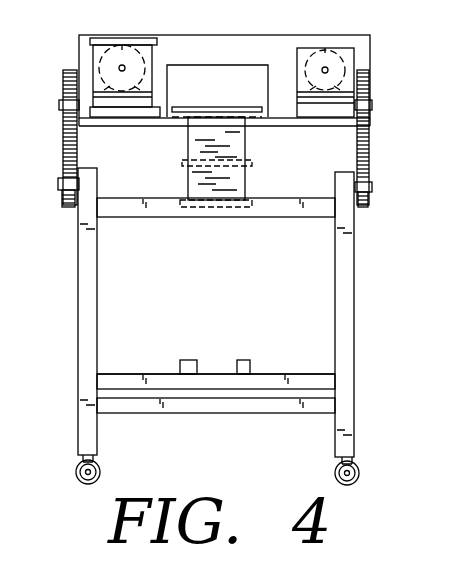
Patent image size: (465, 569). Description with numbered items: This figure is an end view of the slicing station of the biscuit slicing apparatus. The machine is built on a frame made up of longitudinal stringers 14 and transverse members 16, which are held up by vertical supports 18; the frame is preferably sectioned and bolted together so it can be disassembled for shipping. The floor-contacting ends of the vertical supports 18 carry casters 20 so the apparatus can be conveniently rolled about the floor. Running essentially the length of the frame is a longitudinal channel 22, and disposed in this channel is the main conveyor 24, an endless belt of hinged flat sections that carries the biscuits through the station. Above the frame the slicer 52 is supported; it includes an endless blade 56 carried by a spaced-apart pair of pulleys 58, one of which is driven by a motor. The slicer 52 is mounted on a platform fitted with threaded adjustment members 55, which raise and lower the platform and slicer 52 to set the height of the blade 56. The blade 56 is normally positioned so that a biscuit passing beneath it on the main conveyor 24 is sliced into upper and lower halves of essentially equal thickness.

The longitudinal stringer 14 is at (182, 360).
The transverse member 16 is at (304, 375).
The vertical support 18 is at (78, 342).
The caster 20 is at (78, 473).
The longitudinal channel 22 is at (188, 187).
The main conveyor 24 is at (247, 152).
The slicer 52 is at (213, 35).
The threaded adjustment member 55 is at (63, 147).
The endless blade 56 is at (232, 107).
The pulley 58 is at (118, 43).